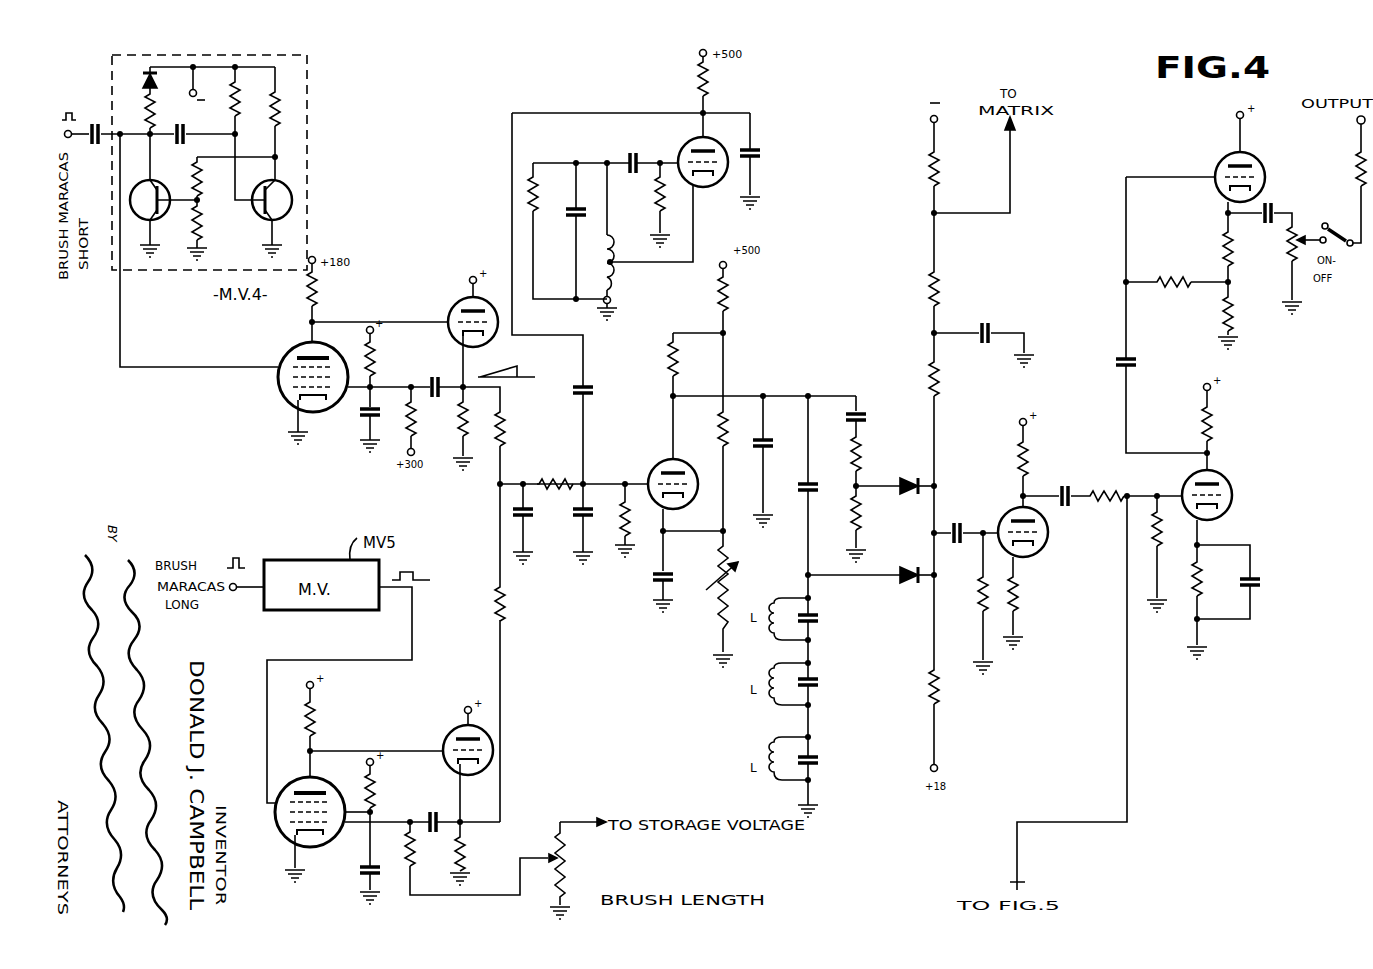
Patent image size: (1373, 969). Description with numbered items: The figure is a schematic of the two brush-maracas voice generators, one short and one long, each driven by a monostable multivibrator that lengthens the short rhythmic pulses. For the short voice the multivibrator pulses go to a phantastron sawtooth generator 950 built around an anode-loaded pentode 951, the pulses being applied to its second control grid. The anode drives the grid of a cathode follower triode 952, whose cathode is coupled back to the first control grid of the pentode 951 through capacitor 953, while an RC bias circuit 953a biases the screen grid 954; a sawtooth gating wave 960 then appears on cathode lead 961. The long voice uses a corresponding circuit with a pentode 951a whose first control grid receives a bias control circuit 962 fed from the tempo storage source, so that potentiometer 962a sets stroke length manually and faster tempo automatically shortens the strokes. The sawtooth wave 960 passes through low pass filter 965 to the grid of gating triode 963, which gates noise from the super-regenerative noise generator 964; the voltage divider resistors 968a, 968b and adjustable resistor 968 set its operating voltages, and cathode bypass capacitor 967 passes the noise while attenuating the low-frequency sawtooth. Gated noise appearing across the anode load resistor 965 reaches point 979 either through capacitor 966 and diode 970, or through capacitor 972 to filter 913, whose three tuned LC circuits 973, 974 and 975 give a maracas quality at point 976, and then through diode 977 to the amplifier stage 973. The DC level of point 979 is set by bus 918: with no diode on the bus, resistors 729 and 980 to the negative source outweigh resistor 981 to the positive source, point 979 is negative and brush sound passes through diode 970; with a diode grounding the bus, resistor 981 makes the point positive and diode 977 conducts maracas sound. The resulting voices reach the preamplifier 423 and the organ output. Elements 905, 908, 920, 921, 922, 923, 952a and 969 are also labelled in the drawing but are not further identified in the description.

The resistor 729 is at (930, 165).
The resistor 905 is at (503, 698).
The oscillator tube 908 is at (734, 241).
The filter 913 is at (799, 694).
The bus 918 is at (1012, 162).
The connection to FIG. 5 920 is at (1125, 628).
The cathode resistor 921 is at (1282, 372).
The capacitor 922 is at (986, 323).
The preamplifier tube 923 is at (1198, 210).
The phantastron sawtooth generator 950 is at (322, 470).
The pentode 951 is at (297, 350).
The pentode 951a is at (277, 832).
The cathode follower triode 952 is at (458, 305).
The cathode follower tube 952a is at (493, 750).
The capacitor 953 is at (437, 377).
The RC bias circuit 953a is at (362, 356).
The screen grid 954 is at (284, 396).
The sawtooth gating wave 960 is at (512, 366).
The cathode lead 961 is at (503, 402).
The bias control circuit 962 is at (512, 855).
The potentiometer 962a is at (566, 858).
The gating triode 963 is at (665, 462).
The super-regenerative noise generator 964 is at (660, 304).
The low pass filter 965 is at (670, 348).
The capacitor 966 is at (862, 414).
The cathode bypass capacitor 967 is at (650, 582).
The adjustable resistor 968 is at (738, 612).
The voltage divider resistor 968a is at (735, 312).
The voltage divider resistor 968b is at (726, 412).
The supply terminal 969 is at (728, 268).
The diode 970 is at (906, 478).
The capacitor 972 is at (800, 489).
The tuned LC circuit 973 is at (1049, 534).
The tuned LC circuit 974 is at (778, 705).
The tuned LC circuit 975 is at (775, 781).
The point 976 is at (850, 578).
The diode 977 is at (912, 548).
The point 979 is at (930, 533).
The resistor 980 is at (929, 364).
The resistor 981 is at (930, 690).
The preamplifier 423 is at (1320, 443).